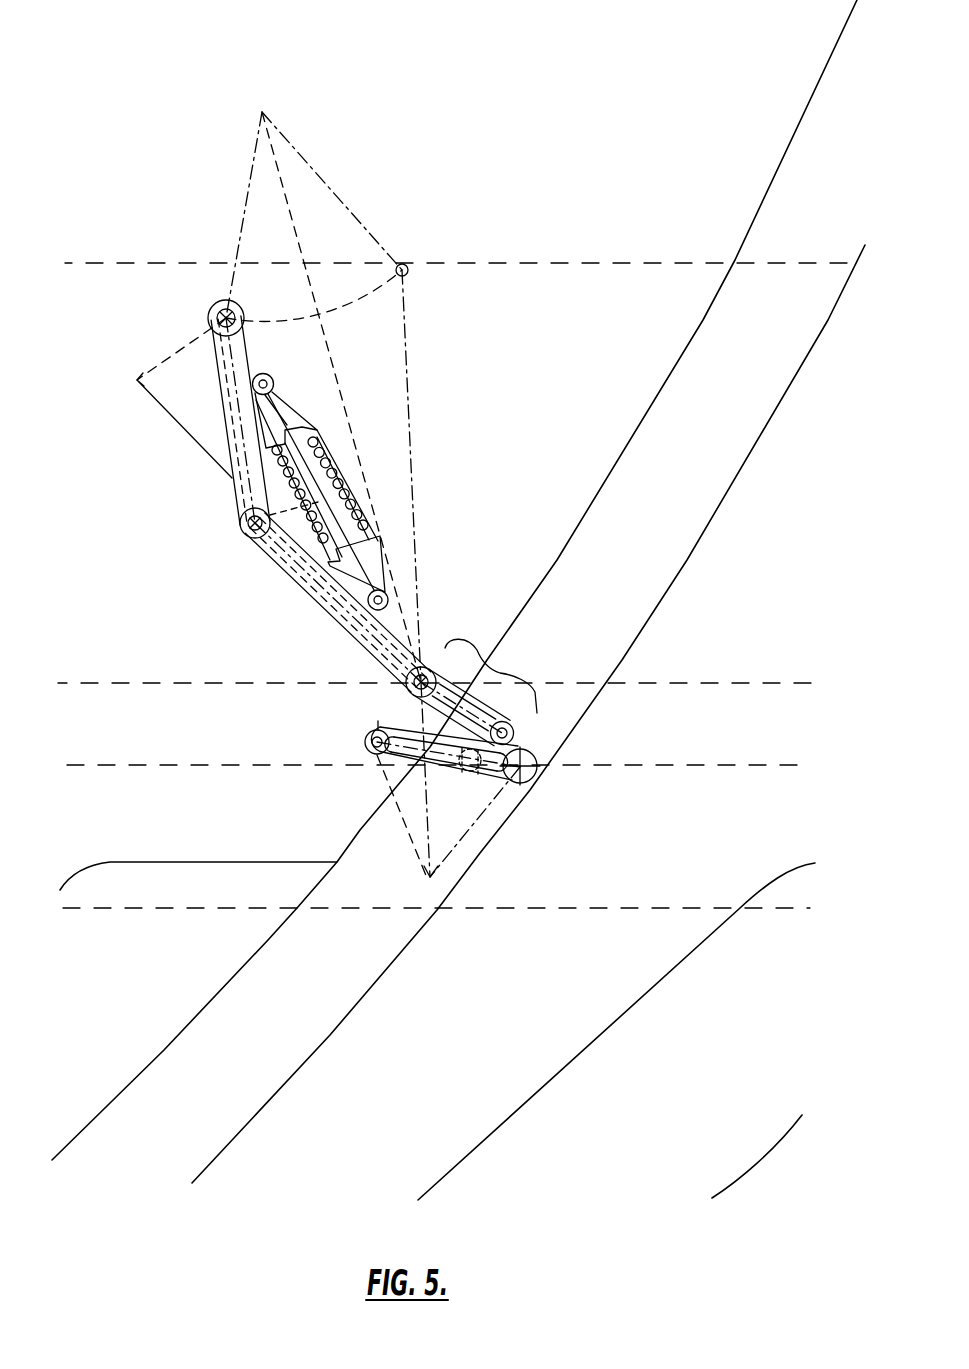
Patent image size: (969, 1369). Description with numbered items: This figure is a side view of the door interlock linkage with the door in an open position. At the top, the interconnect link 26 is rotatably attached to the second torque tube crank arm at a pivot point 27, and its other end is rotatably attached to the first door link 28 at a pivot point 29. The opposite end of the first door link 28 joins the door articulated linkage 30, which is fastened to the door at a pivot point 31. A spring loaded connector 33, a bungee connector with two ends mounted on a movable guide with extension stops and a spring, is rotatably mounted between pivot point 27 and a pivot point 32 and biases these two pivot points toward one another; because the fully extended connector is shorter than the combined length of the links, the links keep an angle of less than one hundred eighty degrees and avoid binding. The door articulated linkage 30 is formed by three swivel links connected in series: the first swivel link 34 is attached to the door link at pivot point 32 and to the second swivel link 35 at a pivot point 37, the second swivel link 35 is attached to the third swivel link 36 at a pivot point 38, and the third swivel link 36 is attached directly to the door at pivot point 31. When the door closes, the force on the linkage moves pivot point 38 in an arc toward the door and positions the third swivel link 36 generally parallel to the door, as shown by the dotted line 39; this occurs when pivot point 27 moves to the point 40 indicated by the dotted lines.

The interconnect link 26 is at (227, 423).
The pivot point 27 is at (222, 302).
The first door link 28 is at (300, 585).
The pivot point 29 is at (240, 532).
The door articulated linkage 30 is at (500, 673).
The pivot point 31 is at (531, 755).
The pivot point 32 is at (406, 687).
The spring loaded connector 33 is at (345, 487).
The first swivel link 34 is at (470, 680).
The second swivel link 35 is at (420, 727).
The third swivel link 36 is at (432, 770).
The pivot point 37 is at (515, 741).
The pivot point 38 is at (366, 750).
The dotted line 39 is at (487, 813).
The point 40 is at (403, 265).